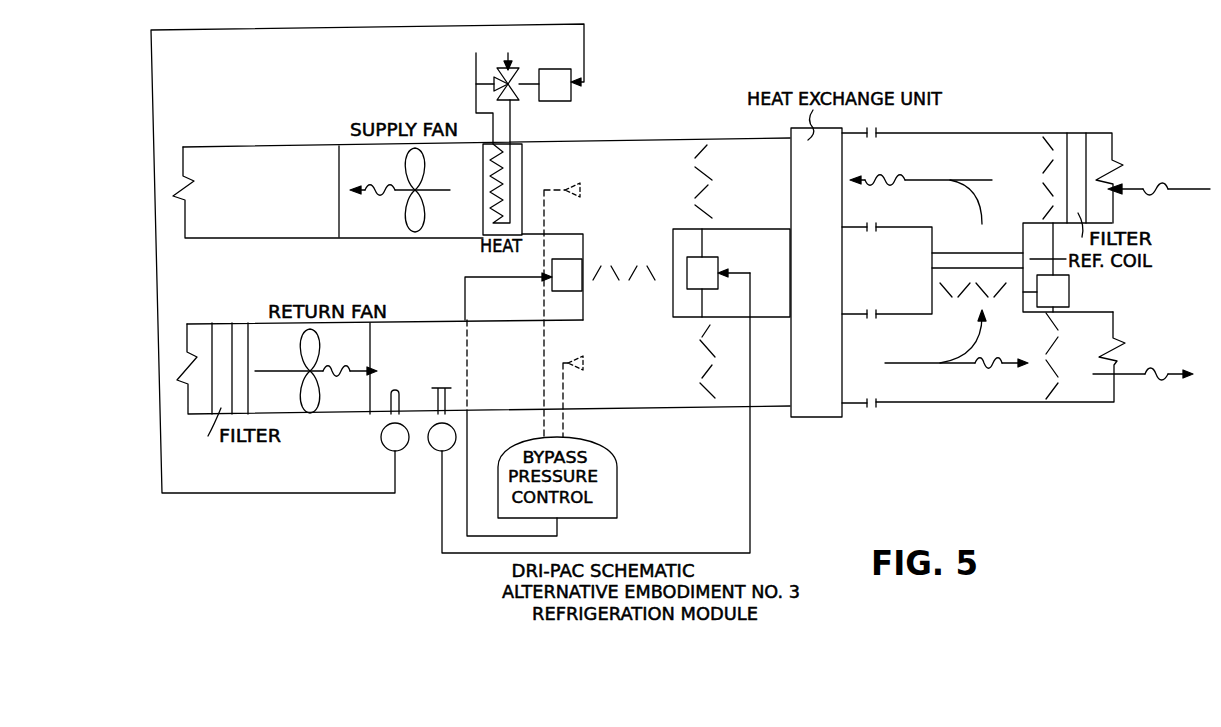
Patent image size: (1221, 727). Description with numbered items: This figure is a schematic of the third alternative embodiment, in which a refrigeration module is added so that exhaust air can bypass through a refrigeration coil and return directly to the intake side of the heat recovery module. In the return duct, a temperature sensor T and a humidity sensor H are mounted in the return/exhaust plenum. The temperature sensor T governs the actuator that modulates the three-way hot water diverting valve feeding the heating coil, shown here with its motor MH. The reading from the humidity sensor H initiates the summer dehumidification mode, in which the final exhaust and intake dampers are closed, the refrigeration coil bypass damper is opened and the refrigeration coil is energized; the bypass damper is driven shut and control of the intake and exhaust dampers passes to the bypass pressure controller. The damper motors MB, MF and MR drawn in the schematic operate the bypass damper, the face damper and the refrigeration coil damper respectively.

The heating valve motor MH is at (523, 77).
The bypass damper motor MB is at (523, 289).
The face damper motor MF is at (718, 273).
The refrigeration coil damper motor MR is at (1046, 267).
The temperature sensor T is at (395, 420).
The humidity sensor H is at (442, 419).